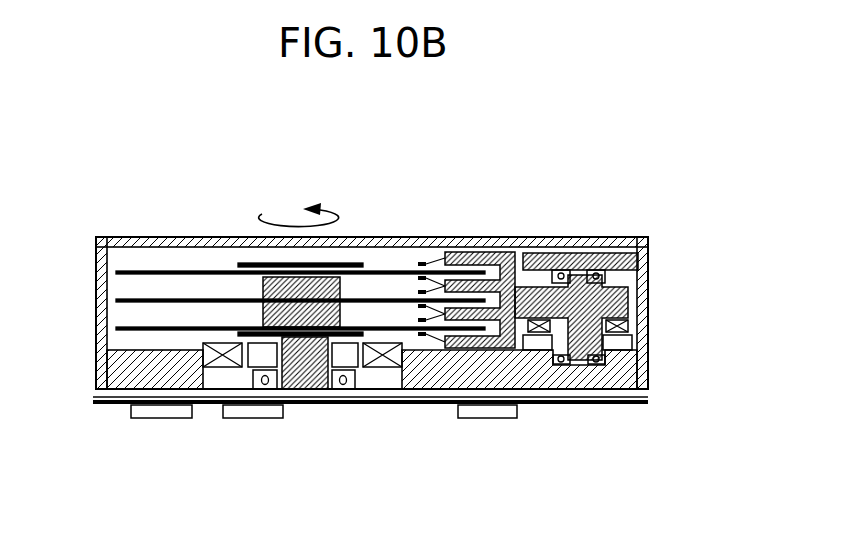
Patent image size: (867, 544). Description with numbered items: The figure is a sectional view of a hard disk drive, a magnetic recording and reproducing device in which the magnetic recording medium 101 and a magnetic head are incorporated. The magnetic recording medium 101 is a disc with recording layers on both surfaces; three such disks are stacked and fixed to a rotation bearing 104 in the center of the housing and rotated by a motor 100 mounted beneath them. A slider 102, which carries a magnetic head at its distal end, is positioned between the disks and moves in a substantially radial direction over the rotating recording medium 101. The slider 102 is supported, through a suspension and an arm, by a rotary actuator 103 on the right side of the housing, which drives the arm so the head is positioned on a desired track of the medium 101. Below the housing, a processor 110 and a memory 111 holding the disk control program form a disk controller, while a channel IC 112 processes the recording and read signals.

The motor 100 is at (370, 370).
The magnetic recording medium 101 is at (133, 271).
The slider 102 is at (419, 262).
The rotary actuator 103 is at (615, 300).
The rotation bearing 104 is at (303, 373).
The processor 110 is at (162, 418).
The memory 111 is at (253, 418).
The channel IC 112 is at (497, 418).